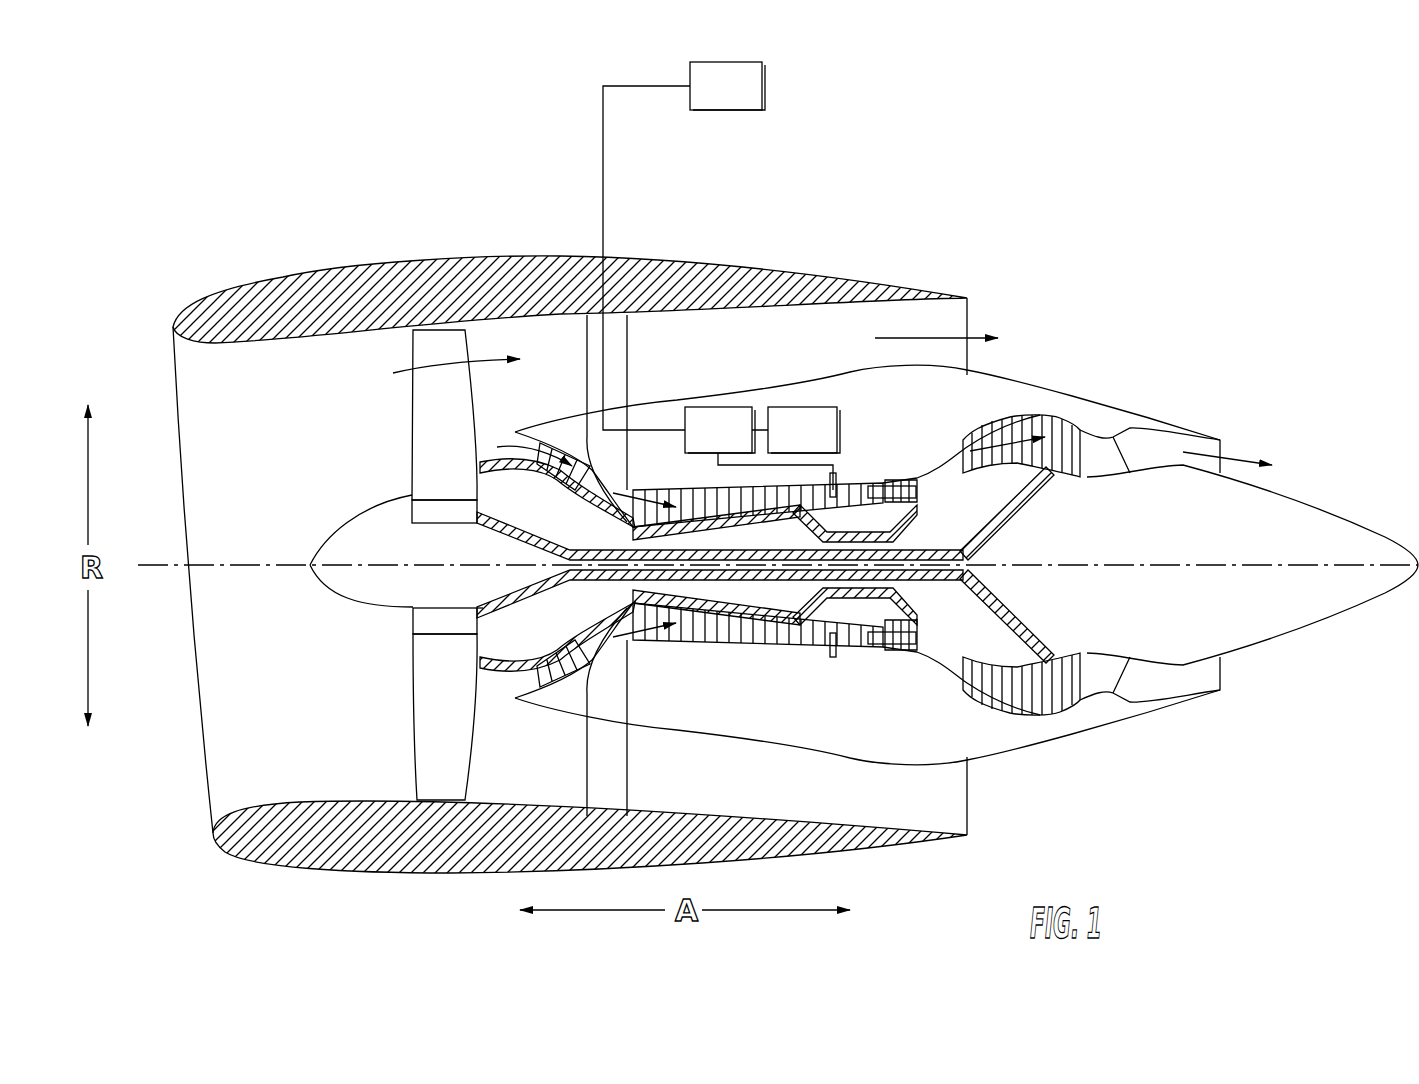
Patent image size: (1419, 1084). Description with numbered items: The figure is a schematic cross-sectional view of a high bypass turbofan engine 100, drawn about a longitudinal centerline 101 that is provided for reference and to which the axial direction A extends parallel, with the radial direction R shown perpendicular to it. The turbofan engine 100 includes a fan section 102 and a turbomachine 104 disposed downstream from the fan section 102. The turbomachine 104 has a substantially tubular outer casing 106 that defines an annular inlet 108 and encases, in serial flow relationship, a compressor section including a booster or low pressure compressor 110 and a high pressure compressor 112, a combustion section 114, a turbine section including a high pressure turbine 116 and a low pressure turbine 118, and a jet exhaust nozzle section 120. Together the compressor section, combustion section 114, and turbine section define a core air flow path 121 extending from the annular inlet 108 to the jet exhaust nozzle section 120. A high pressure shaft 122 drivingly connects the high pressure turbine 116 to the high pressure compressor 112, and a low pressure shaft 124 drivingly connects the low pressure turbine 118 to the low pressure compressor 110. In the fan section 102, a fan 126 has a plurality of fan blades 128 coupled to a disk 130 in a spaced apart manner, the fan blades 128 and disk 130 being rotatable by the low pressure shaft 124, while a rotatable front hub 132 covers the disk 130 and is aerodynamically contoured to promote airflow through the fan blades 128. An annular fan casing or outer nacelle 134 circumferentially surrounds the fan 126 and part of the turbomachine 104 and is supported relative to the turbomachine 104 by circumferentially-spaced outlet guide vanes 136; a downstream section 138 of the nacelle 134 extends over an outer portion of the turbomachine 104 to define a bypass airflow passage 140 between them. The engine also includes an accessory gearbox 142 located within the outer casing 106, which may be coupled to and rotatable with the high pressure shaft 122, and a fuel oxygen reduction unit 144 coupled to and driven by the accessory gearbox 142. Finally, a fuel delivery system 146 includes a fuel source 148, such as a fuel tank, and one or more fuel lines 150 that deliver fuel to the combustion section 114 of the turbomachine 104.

The turbofan engine 100 is at (1128, 266).
The longitudinal centerline 101 is at (1190, 565).
The fan section 102 is at (363, 348).
The turbomachine 104 is at (749, 362).
The outer casing 106 is at (810, 758).
The annular inlet 108 is at (528, 681).
The low pressure compressor 110 is at (567, 705).
The high pressure compressor 112 is at (662, 642).
The combustion section 114 is at (855, 640).
The high pressure turbine 116 is at (922, 647).
The low pressure turbine 118 is at (1058, 714).
The jet exhaust nozzle section 120 is at (1126, 682).
The core air flow path 121 is at (611, 649).
The high pressure shaft 122 is at (862, 514).
The low pressure shaft 124 is at (917, 552).
The fan 126 is at (351, 430).
The fan blades 128 is at (412, 732).
The disk 130 is at (427, 515).
The front hub 132 is at (323, 583).
The outer nacelle 134 is at (470, 873).
The outlet guide vanes 136 is at (628, 349).
The downstream section 138 is at (880, 281).
The bypass airflow passage 140 is at (855, 350).
The accessory gearbox 142 is at (784, 449).
The fuel oxygen reduction unit 144 is at (700, 449).
The fuel delivery system 146 is at (505, 136).
The fuel source 148 is at (708, 106).
The fuel lines 150 is at (603, 200).